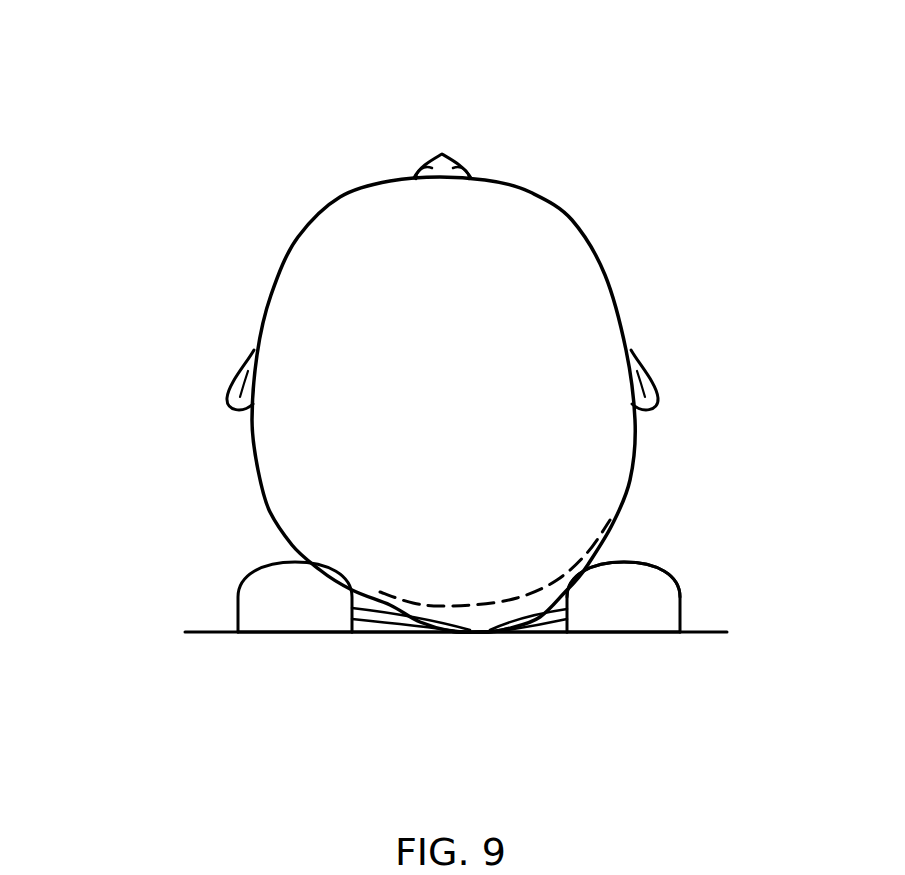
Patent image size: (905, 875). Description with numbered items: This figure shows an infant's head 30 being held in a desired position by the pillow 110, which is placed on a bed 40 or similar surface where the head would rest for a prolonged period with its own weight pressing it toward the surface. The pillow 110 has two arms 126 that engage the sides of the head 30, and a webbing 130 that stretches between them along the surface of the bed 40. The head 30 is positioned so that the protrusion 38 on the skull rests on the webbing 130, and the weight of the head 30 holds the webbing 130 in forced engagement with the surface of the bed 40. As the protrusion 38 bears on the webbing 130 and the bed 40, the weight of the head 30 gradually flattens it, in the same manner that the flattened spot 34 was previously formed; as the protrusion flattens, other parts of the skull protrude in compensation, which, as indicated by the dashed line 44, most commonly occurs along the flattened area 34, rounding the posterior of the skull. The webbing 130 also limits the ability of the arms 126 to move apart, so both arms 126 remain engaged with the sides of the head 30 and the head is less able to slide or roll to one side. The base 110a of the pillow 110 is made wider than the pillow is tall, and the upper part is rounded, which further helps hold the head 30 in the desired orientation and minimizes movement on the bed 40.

The head 30 is at (548, 232).
The flattened spot 34 is at (352, 587).
The protrusion 38 is at (485, 632).
The bed 40 is at (362, 632).
The dashed line 44 is at (283, 532).
The pillow 110 is at (667, 608).
The base 110a is at (258, 632).
The arms 126 is at (662, 582).
The webbing 130 is at (397, 632).